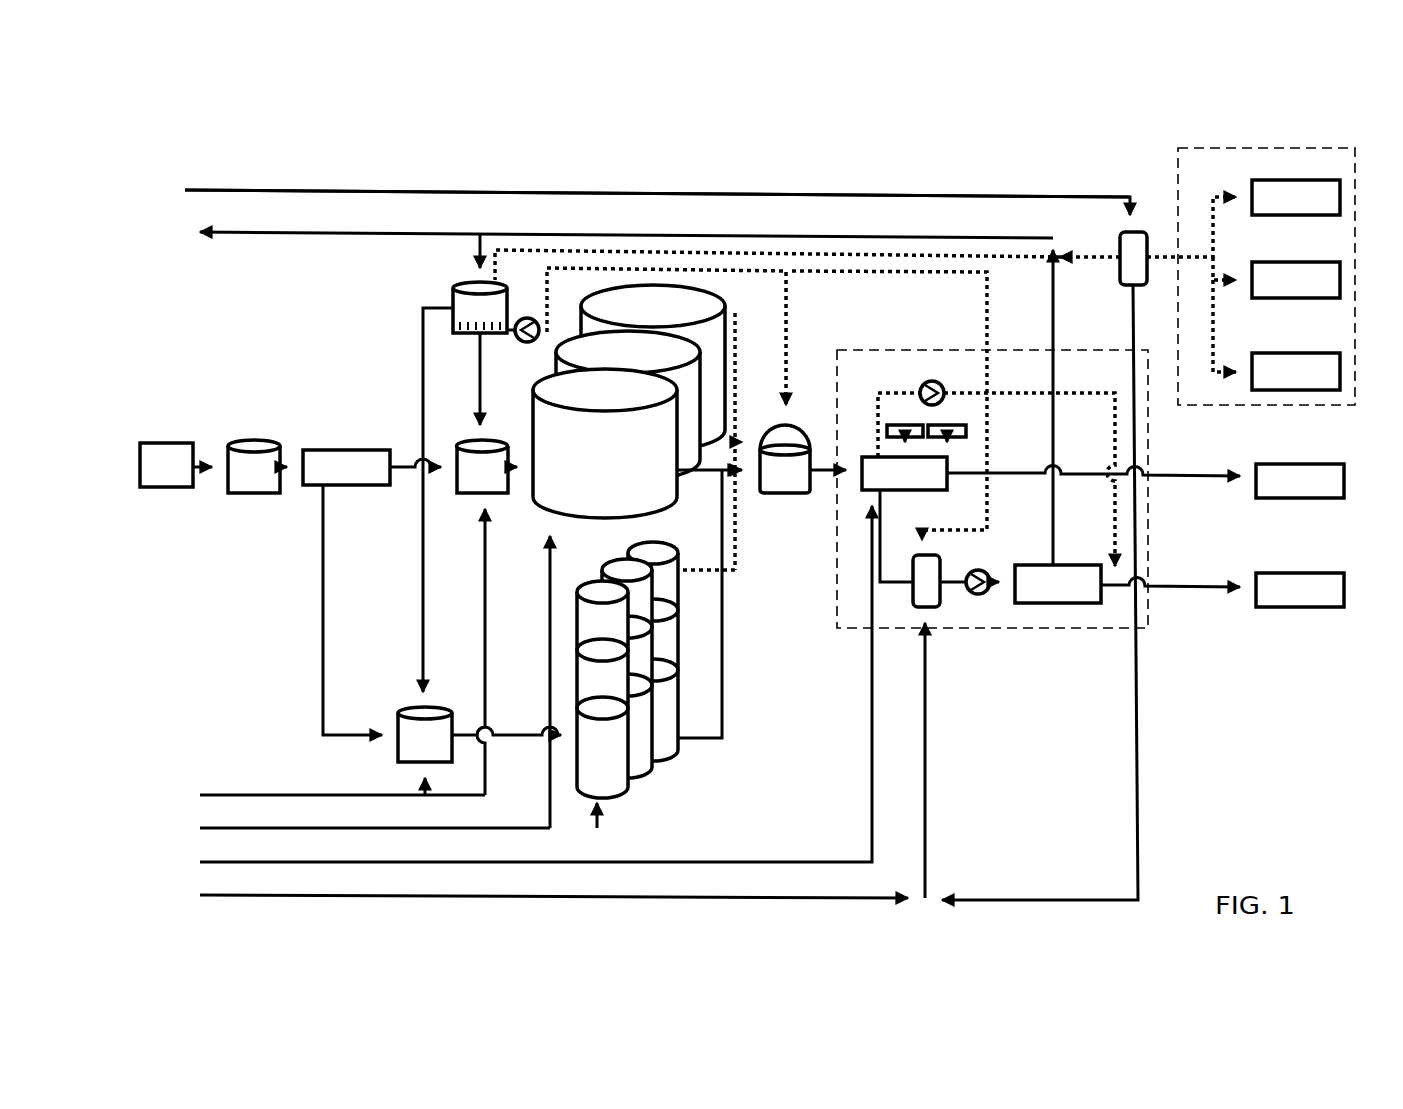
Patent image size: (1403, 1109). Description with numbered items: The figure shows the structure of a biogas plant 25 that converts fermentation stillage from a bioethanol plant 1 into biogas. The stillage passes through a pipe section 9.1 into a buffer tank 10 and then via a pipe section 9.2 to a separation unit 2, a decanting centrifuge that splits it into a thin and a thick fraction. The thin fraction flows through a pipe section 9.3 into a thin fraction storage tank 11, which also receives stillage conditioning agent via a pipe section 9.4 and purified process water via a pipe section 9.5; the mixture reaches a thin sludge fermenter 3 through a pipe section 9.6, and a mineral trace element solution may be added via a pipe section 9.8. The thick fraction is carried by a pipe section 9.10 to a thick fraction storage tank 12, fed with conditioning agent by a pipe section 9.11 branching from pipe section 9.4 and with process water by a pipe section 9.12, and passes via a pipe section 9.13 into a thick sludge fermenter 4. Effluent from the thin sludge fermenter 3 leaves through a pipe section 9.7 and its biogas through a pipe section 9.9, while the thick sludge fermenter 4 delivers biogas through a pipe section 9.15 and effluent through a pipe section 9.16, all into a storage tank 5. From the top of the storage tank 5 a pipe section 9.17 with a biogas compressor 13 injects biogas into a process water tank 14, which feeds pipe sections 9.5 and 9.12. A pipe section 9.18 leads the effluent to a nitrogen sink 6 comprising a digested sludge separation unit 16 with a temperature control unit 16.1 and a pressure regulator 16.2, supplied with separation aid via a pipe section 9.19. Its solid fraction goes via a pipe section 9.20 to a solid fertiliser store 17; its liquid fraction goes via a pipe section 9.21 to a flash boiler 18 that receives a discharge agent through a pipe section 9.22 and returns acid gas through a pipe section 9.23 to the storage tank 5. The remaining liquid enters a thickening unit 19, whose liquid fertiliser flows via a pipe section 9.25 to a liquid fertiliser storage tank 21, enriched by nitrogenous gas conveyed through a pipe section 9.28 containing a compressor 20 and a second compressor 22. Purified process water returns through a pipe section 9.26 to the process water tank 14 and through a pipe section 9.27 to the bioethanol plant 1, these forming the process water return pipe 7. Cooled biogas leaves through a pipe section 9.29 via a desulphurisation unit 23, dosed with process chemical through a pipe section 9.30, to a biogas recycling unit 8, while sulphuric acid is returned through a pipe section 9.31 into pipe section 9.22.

The bioethanol plant 1 is at (166, 465).
The separation unit 2 is at (346, 467).
The thin sludge fermenter 3 is at (627, 670).
The thick sludge fermenter 4 is at (629, 401).
The storage tank 5 is at (785, 459).
The nitrogen sink 6 is at (988, 476).
The process water return pipe 7 is at (420, 257).
The biogas recycling unit 8 is at (1251, 276).
The buffer tank 10 is at (254, 466).
The thin fraction storage tank 11 is at (425, 734).
The thick fraction storage tank 12 is at (487, 466).
The biogas compressor 13 is at (523, 315).
The process water tank 14 is at (480, 307).
The digested sludge separation unit 16 is at (904, 473).
The temperature control unit 16.1 is at (905, 420).
The pressure regulator 16.2 is at (947, 420).
The solid fertiliser store 17 is at (1300, 481).
The flash boiler 18 is at (926, 581).
The thickening unit 19 is at (1058, 584).
The compressor 20 is at (932, 380).
The liquid fertiliser storage tank 21 is at (1300, 590).
The second compressor 22 is at (969, 569).
The desulphurisation unit 23 is at (1133, 258).
The biogas plant 25 is at (515, 178).
The pipe section 9.1 is at (209, 449).
The pipe section 9.2 is at (295, 447).
The pipe section 9.3 is at (335, 610).
The pipe section 9.4 is at (342, 780).
The pipe section 9.5 is at (422, 500).
The pipe section 9.6 is at (506, 720).
The pipe section 9.7 is at (719, 604).
The pipe section 9.8 is at (398, 814).
The pipe section 9.9 is at (729, 520).
The pipe section 9.10 is at (412, 447).
The pipe section 9.11 is at (536, 668).
The pipe section 9.12 is at (460, 379).
The pipe section 9.13 is at (512, 442).
The pipe section 9.15 is at (755, 441).
The pipe section 9.16 is at (709, 486).
The pipe section 9.17 is at (666, 336).
The pipe section 9.18 is at (832, 486).
The pipe section 9.19 is at (536, 684).
The pipe section 9.20 is at (1093, 461).
The pipe section 9.21 is at (902, 536).
The pipe section 9.22 is at (584, 760).
The pipe section 9.23 is at (889, 405).
The pipe section 9.25 is at (1170, 574).
The pipe section 9.26 is at (807, 240).
The pipe section 9.27 is at (626, 234).
The pipe section 9.28 is at (996, 466).
The pipe section 9.29 is at (1078, 395).
The pipe section 9.30 is at (657, 186).
The pipe section 9.31 is at (1057, 592).